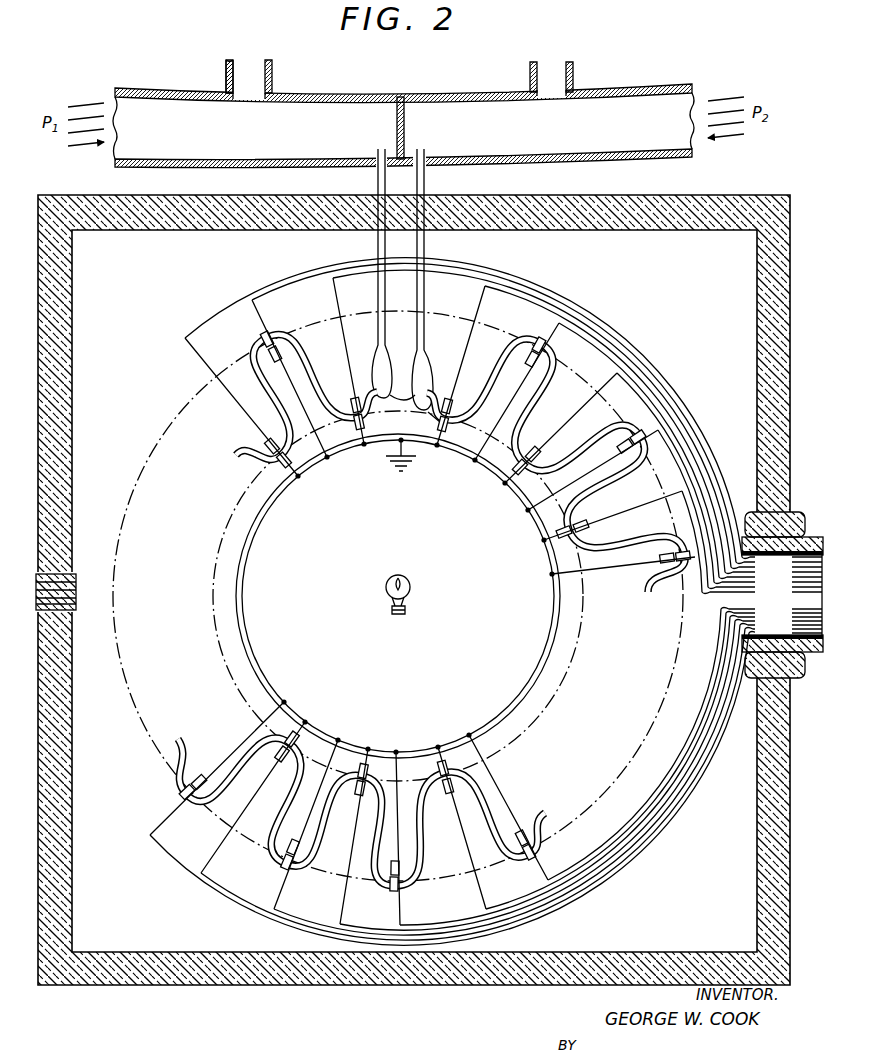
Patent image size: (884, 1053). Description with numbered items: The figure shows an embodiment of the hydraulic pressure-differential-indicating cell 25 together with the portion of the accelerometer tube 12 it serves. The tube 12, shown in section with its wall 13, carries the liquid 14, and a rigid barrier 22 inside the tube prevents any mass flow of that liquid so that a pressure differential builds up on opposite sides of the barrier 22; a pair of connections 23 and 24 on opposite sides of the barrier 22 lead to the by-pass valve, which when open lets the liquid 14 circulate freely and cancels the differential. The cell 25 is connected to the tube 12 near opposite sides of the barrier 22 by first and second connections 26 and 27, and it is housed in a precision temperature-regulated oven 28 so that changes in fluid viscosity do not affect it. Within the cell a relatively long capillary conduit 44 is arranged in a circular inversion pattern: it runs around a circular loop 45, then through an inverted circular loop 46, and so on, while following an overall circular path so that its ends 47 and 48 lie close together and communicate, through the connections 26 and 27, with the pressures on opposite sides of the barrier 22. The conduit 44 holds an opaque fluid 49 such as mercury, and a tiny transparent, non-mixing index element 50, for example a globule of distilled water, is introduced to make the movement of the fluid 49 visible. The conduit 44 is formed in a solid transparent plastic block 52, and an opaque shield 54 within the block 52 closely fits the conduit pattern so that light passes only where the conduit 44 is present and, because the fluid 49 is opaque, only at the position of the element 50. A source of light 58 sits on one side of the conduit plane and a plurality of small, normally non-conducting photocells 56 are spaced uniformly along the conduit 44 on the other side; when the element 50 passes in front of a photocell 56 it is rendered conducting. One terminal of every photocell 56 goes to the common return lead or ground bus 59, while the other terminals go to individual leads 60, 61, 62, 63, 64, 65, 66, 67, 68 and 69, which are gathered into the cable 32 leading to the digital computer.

The accelerometer tube 12 is at (600, 160).
The pipe wall 13 is at (664, 82).
The liquid 14 is at (664, 150).
The rigid barrier 22 is at (405, 122).
The connection 23 is at (274, 92).
The connection 24 is at (574, 92).
The hydraulic pressure-differential-indicating cell 25 is at (648, 348).
The first connection 26 is at (374, 180).
The second connection 27 is at (430, 186).
The temperature-regulated oven 28 is at (236, 985).
The cable 32 is at (816, 660).
The capillary conduit 44 is at (610, 430).
The circular loop 45 is at (452, 418).
The inverted circular loop 46 is at (545, 378).
The conduit end 47 is at (388, 340).
The conduit end 48 is at (428, 350).
The fluid 49 is at (402, 384).
The index element 50 is at (408, 882).
The block of plastic material 52 is at (178, 420).
The opaque shield 54 is at (200, 504).
The photocell 56 is at (434, 607).
The source of light 58 is at (412, 585).
The common return lead 59 is at (546, 650).
The individual lead 60 is at (745, 632).
The individual lead 61 is at (760, 628).
The individual lead 62 is at (786, 624).
The individual lead 63 is at (810, 620).
The individual lead 64 is at (462, 912).
The individual lead 65 is at (520, 890).
The individual lead 66 is at (586, 852).
The individual lead 67 is at (752, 520).
The individual lead 68 is at (800, 520).
The individual lead 69 is at (818, 550).